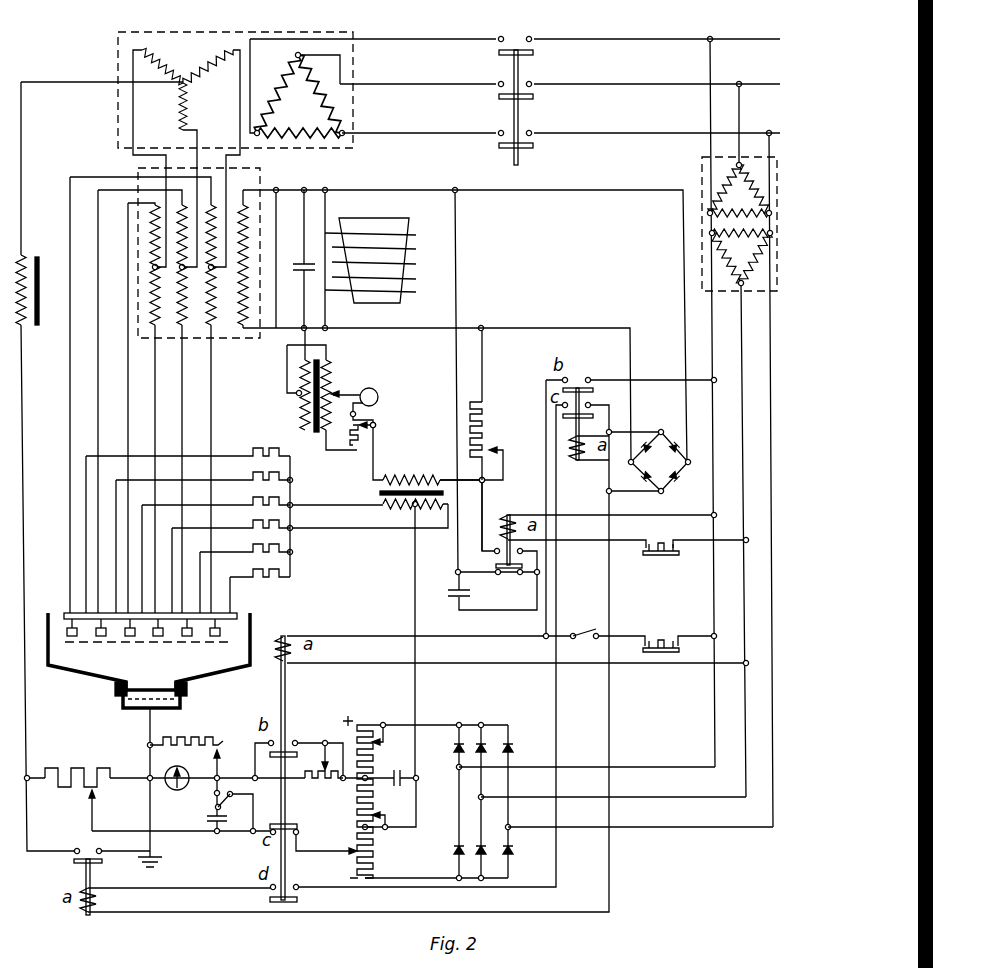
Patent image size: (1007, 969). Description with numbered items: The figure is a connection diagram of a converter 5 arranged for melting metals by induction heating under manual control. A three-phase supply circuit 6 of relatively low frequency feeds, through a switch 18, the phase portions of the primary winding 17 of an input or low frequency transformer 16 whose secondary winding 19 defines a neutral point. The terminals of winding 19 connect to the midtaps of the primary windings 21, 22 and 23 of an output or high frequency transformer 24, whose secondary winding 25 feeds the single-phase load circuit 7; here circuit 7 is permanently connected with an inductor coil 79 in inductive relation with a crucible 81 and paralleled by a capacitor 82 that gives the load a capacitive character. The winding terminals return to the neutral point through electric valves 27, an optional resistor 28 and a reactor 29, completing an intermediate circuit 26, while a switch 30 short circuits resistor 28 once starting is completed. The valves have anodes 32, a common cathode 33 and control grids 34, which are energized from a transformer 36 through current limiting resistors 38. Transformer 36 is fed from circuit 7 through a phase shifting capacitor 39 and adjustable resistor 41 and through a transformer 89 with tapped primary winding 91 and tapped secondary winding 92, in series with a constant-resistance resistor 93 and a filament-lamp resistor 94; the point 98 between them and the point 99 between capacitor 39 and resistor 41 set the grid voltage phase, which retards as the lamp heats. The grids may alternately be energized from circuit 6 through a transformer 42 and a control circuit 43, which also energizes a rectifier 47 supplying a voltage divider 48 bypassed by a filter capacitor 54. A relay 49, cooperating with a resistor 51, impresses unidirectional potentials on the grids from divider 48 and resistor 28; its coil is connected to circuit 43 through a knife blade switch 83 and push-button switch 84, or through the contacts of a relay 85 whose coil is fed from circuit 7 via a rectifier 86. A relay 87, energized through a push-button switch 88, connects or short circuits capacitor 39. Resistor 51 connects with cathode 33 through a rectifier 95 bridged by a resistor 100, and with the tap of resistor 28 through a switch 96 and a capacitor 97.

The converter 5 is at (57, 427).
The three-phase supply circuit 6 is at (638, 134).
The single-phase load circuit 7 is at (258, 340).
The input or low frequency transformer 16 is at (163, 34).
The primary winding 17 is at (300, 95).
The switch 18 is at (511, 156).
The secondary winding 19 is at (197, 106).
The primary winding 21 is at (150, 334).
The primary winding 22 is at (180, 334).
The primary winding 23 is at (209, 334).
The output or high frequency transformer 24 is at (258, 180).
The secondary winding 25 is at (243, 334).
The intermediate circuit 26 is at (22, 233).
The electric valves 27 is at (222, 675).
The resistor 28 is at (78, 769).
The reactor 29 is at (38, 325).
The switch 30 is at (77, 869).
The anodes 32 is at (128, 641).
The common cathode 33 is at (140, 710).
The control electrodes 34 is at (142, 645).
The transformer 36 is at (378, 496).
The current limiting resistors 38 is at (278, 580).
The capacitor 39 is at (456, 599).
The adjustable resistor 41 is at (489, 412).
The transformer 42 is at (702, 160).
The control circuit 43 is at (688, 800).
The rectifier 47 is at (482, 831).
The voltage divider 48 is at (356, 810).
The relay 49 is at (286, 705).
The resistor 51 is at (343, 783).
The filter capacitor 54 is at (397, 767).
The inductor coil 79 is at (408, 294).
The crucible 81 is at (409, 223).
The capacitor 82 is at (307, 272).
The knife blade switch 83 is at (584, 632).
The push-button switch 84 is at (676, 650).
The relay 85 is at (576, 433).
The rectifier 86 is at (668, 468).
The relay 87 is at (508, 558).
The push-button switch 88 is at (659, 556).
The transformer 89 is at (309, 409).
The tapped primary winding 91 is at (300, 408).
The tapped secondary winding 92 is at (332, 374).
The resistor 93 is at (357, 451).
The resistor 94 is at (378, 396).
The rectifier 95 is at (174, 788).
The switch 96 is at (232, 801).
The capacitor 97 is at (207, 819).
The point 98 is at (377, 425).
The point 99 is at (485, 484).
The resistor 100 is at (205, 740).